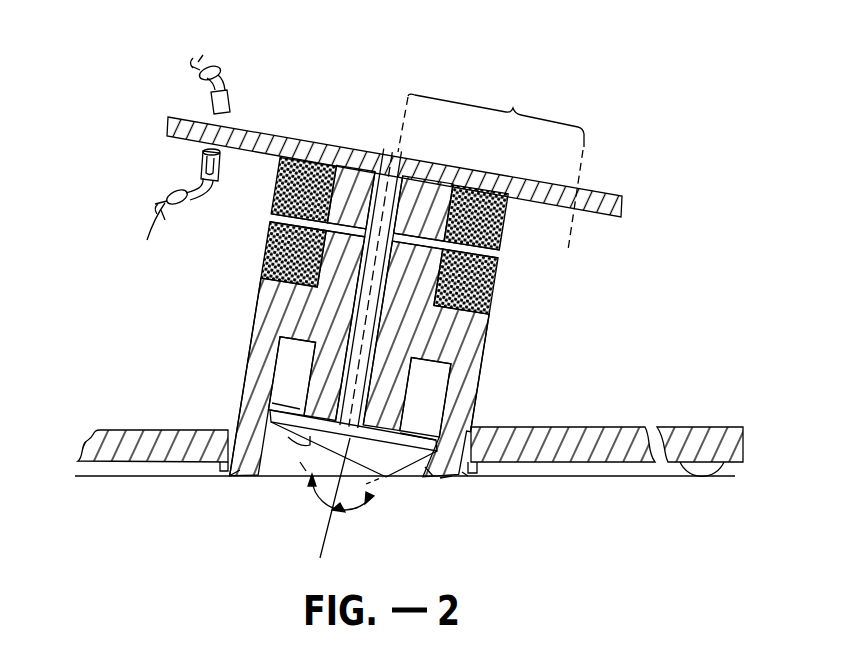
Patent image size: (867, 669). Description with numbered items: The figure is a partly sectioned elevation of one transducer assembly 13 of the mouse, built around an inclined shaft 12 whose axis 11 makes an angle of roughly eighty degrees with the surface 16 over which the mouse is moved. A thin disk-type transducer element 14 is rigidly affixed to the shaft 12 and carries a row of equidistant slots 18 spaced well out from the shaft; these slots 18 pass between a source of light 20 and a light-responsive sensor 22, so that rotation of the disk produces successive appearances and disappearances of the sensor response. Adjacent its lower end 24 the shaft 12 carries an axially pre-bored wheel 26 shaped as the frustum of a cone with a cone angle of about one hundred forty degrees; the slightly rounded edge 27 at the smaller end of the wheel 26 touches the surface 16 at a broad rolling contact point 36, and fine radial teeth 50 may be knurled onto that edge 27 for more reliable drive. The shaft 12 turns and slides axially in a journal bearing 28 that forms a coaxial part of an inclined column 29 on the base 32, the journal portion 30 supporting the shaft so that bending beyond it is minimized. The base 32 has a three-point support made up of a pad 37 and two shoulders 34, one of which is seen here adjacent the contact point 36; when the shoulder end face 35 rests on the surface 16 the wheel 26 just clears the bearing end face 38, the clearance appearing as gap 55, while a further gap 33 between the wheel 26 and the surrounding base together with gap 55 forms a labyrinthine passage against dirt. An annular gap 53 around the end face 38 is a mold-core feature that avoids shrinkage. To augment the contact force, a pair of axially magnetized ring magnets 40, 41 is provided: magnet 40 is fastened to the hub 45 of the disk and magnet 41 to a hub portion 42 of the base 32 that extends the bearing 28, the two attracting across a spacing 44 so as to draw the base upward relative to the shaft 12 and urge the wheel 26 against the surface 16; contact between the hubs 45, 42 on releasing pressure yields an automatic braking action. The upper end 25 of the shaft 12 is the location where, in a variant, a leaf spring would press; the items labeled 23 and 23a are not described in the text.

The axis 11 is at (340, 505).
The shaft 12 is at (390, 150).
The transducer assembly 13 is at (416, 70).
The transducer element 14 is at (430, 190).
The surface 16 is at (517, 477).
The slots 18 is at (214, 128).
The source of light 20 is at (201, 158).
The light-responsive sensor 22 is at (213, 97).
The lead wire 23 is at (228, 69).
The lead wire 23a is at (165, 231).
The lower end 24 is at (302, 485).
The upper end 25 is at (399, 167).
The wheel 26 is at (296, 446).
The edge 27 is at (303, 464).
The journal bearing 28 is at (345, 333).
The inclined column 29 is at (488, 347).
The journal portion 30 is at (400, 373).
The base 32 is at (600, 428).
The gap 33 is at (425, 467).
The shoulders 34 is at (236, 470).
The end face 35 is at (440, 478).
The contact point 36 is at (381, 478).
The pad 37 is at (702, 466).
The end face 38 is at (400, 431).
The ring magnet 40 is at (507, 227).
The ring magnet 41 is at (497, 285).
The hub portion 42 is at (318, 295).
The spacing 44 is at (282, 216).
The hub 45 is at (436, 198).
The radial teeth 50 is at (312, 434).
The annular gap 53 is at (290, 344).
The gap 55 is at (312, 408).